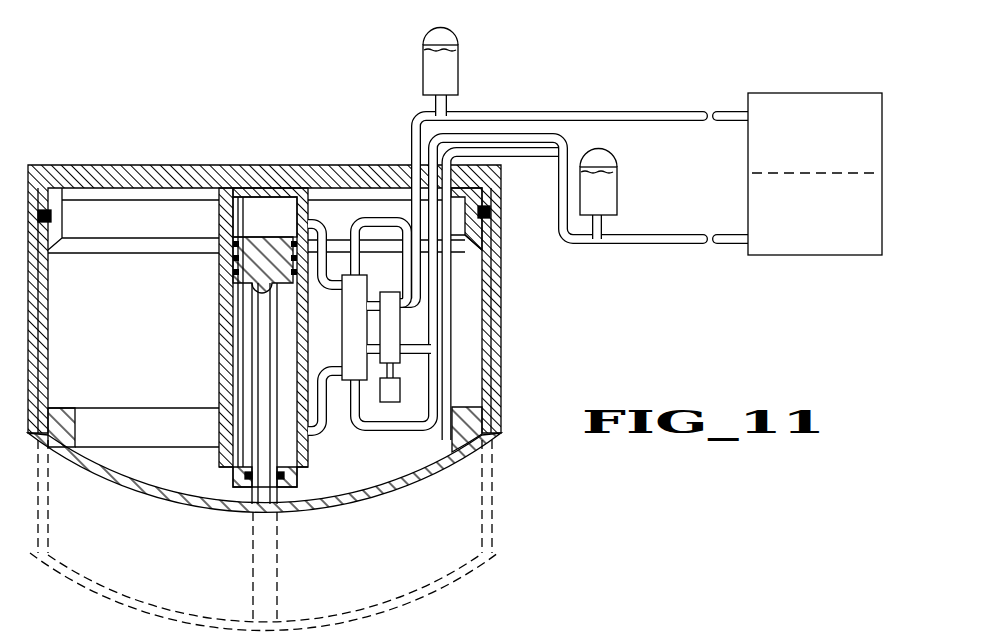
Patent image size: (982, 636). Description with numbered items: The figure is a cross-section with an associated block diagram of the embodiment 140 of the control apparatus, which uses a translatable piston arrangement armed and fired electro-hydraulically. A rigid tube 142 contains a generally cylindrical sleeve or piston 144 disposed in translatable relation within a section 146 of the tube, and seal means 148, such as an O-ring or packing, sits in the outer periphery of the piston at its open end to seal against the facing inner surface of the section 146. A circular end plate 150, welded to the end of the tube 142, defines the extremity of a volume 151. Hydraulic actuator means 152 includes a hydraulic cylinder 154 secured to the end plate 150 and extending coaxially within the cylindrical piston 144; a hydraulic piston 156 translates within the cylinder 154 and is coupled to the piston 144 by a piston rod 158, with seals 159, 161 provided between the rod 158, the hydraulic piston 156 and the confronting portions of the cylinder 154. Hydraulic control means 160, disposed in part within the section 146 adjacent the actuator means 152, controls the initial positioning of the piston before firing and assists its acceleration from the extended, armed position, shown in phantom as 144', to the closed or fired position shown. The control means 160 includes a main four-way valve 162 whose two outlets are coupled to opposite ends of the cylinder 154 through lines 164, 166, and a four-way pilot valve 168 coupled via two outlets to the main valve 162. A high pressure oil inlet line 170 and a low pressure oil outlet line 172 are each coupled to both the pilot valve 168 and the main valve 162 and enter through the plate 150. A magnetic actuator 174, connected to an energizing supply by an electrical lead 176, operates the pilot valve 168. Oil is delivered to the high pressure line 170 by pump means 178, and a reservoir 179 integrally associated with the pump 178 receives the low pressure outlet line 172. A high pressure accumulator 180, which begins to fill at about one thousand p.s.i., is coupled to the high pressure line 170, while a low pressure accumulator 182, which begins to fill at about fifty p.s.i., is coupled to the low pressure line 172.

The embodiment 140 is at (540, 338).
The rigid tube 142 is at (505, 312).
The piston 144 is at (284, 459).
The piston in armed position 144' is at (287, 535).
The section of the tube 146 is at (500, 366).
The seal means 148 is at (487, 213).
The circular end plate 150 is at (82, 192).
The volume 151 is at (138, 335).
The hydraulic actuator means 152 is at (209, 359).
The hydraulic cylinder 154 is at (225, 386).
The hydraulic piston 156 is at (257, 239).
The piston rod 158 is at (257, 424).
The seal 159 is at (284, 478).
The hydraulic control means 160 is at (470, 283).
The seals 161 is at (232, 272).
The main four-way valve 162 is at (343, 300).
The line 164 is at (323, 430).
The line 166 is at (338, 220).
The four-way pilot valve 168 is at (390, 293).
The high pressure oil inlet line 170 is at (443, 392).
The low pressure oil outlet line 172 is at (417, 305).
The magnetic actuator 174 is at (389, 401).
The electrical lead 176 is at (431, 134).
The pump means 178 is at (818, 92).
The reservoir 179 is at (737, 201).
The high pressure accumulator 180 is at (452, 64).
The low pressure accumulator 182 is at (612, 178).